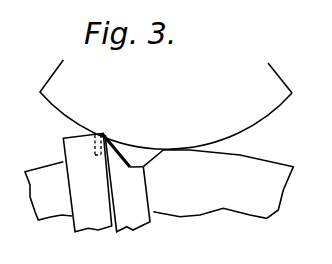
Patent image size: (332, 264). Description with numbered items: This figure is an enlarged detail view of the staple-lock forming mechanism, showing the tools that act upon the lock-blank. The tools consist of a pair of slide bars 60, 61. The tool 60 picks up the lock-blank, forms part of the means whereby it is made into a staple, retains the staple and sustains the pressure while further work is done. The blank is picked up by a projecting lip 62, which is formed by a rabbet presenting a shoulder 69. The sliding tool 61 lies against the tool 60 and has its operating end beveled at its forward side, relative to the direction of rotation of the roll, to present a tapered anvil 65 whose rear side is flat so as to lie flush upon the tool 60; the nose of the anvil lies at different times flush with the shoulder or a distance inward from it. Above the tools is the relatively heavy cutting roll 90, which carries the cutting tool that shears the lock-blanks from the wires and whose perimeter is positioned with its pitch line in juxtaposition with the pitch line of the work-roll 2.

The cutting roll 90 is at (282, 88).
The roll 2 is at (262, 170).
The slide bar tool 60 is at (87, 182).
The sliding tool 61 is at (127, 183).
The projecting lip 62 is at (95, 135).
The tapered anvil 65 is at (127, 148).
The shoulder 69 is at (103, 137).